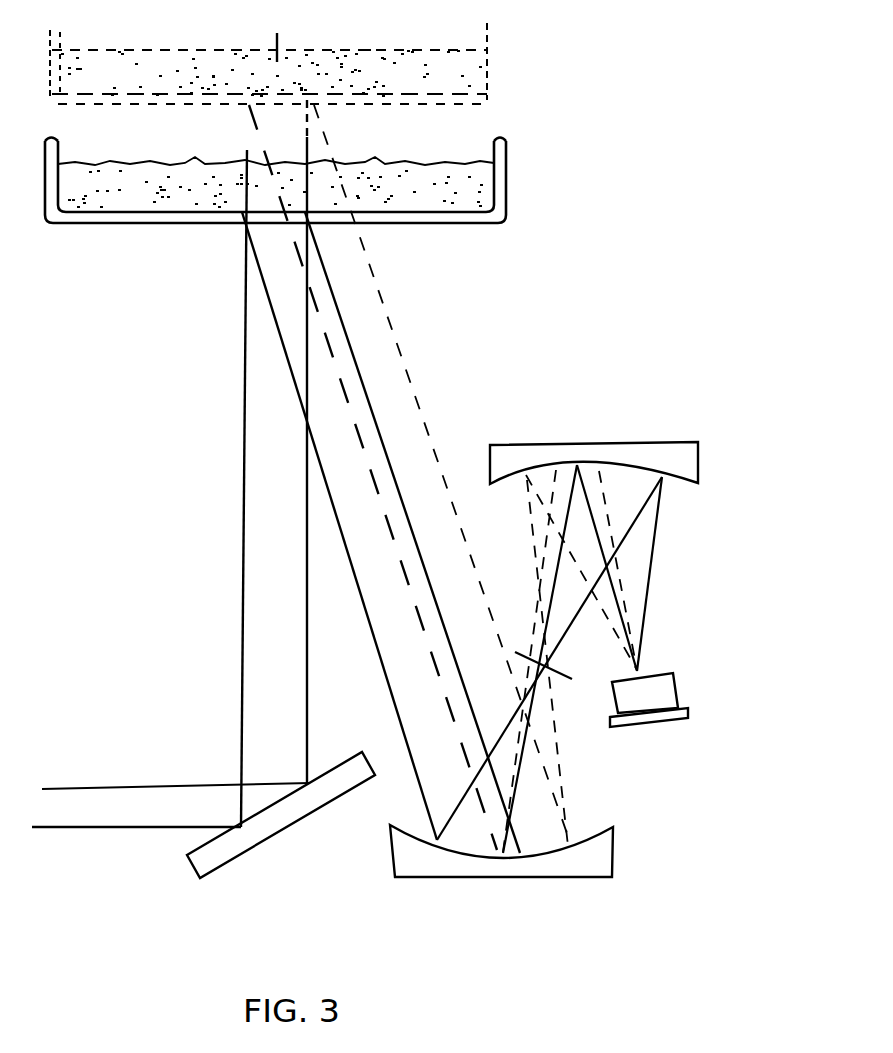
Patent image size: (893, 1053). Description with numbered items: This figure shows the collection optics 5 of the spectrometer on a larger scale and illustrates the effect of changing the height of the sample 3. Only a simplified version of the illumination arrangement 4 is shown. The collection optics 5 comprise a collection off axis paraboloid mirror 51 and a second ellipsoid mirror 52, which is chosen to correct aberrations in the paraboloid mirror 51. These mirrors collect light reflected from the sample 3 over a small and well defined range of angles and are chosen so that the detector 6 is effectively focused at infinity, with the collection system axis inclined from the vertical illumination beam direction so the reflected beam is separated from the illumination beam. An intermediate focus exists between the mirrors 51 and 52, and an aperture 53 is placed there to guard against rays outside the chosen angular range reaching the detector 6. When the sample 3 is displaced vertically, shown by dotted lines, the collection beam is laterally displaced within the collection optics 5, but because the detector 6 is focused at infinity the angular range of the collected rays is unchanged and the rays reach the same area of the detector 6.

The sample 3 is at (445, 178).
The illumination arrangement 4 is at (143, 842).
The collection optics 5 is at (697, 565).
The collection off axis paraboloid mirror 51 is at (597, 861).
The second ellipsoid mirror 52 is at (665, 455).
The aperture 53 is at (572, 679).
The detector 6 is at (662, 700).